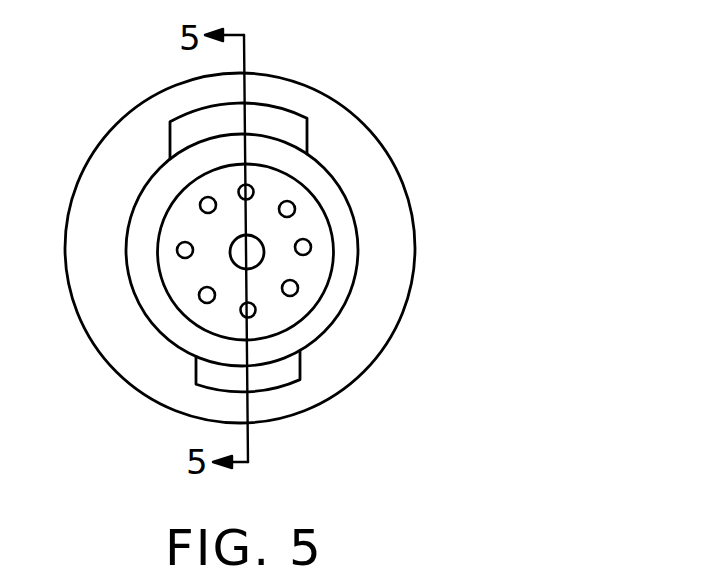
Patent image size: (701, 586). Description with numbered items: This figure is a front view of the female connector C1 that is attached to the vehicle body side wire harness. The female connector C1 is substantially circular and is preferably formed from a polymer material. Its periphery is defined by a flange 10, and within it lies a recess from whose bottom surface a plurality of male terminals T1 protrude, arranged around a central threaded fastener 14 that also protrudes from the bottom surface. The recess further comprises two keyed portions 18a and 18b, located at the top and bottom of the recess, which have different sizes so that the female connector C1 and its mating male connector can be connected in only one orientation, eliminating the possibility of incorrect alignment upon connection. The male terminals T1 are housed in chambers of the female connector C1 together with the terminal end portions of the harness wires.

The flange 10 is at (317, 372).
The threaded fastener 14 is at (240, 253).
The keyed portion 18a is at (273, 122).
The keyed portion 18b is at (283, 378).
The female connector C1 is at (108, 53).
The male terminal T1 is at (202, 200).